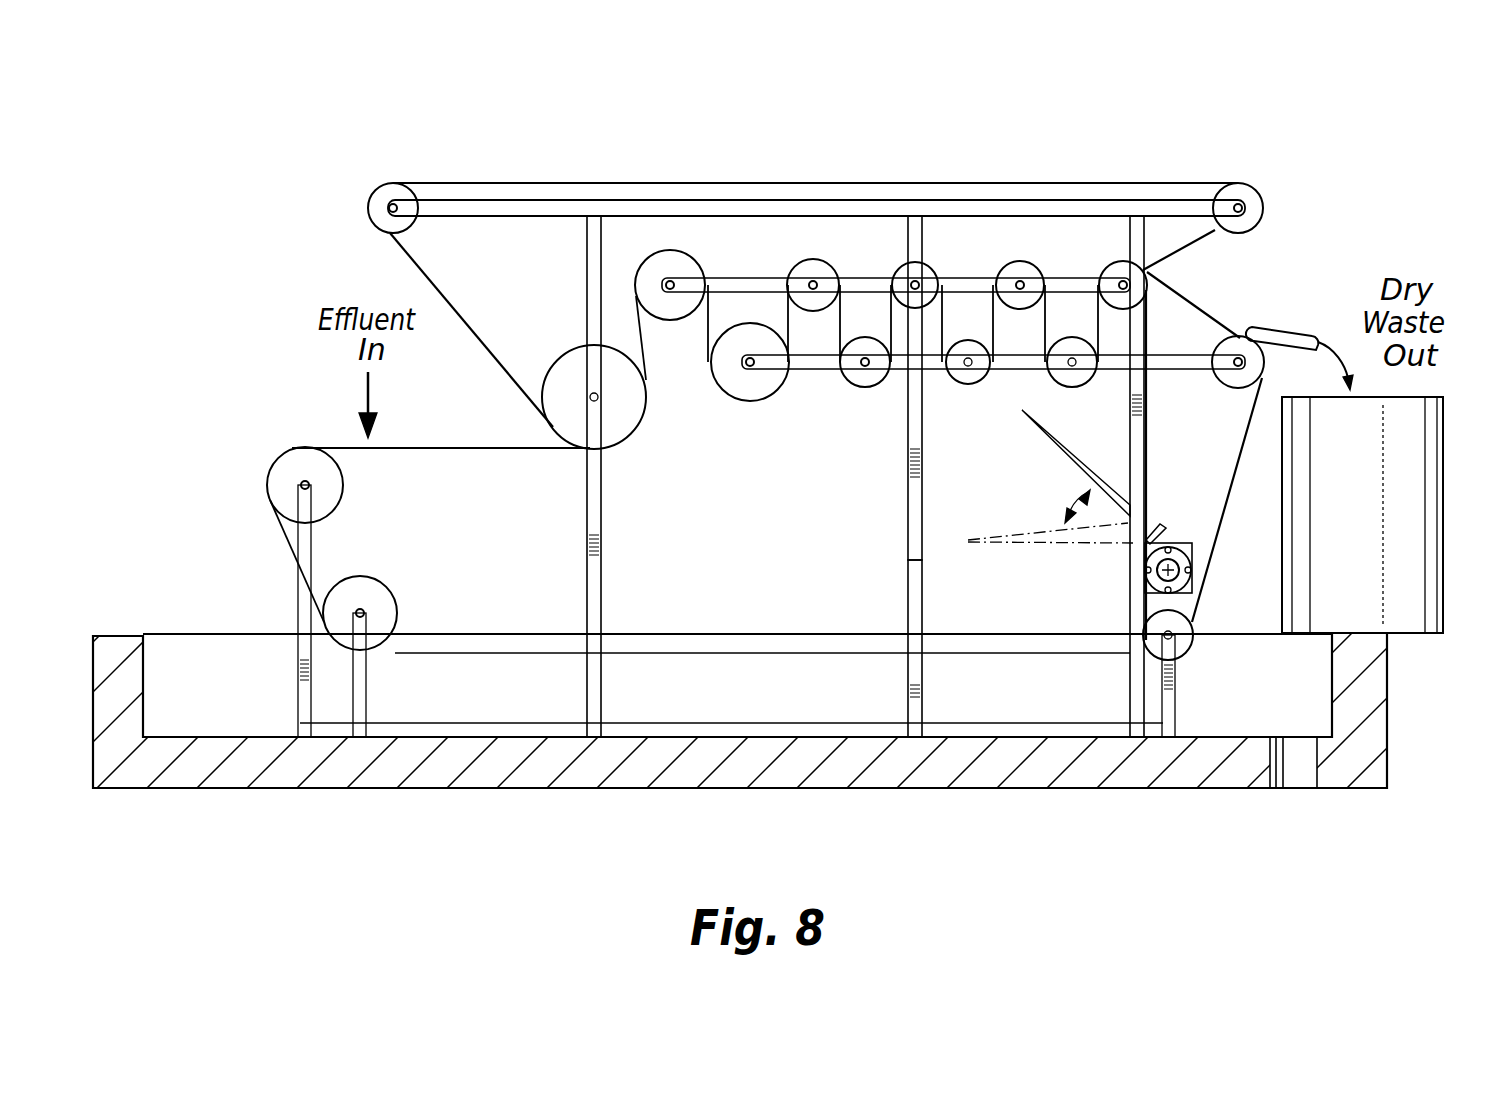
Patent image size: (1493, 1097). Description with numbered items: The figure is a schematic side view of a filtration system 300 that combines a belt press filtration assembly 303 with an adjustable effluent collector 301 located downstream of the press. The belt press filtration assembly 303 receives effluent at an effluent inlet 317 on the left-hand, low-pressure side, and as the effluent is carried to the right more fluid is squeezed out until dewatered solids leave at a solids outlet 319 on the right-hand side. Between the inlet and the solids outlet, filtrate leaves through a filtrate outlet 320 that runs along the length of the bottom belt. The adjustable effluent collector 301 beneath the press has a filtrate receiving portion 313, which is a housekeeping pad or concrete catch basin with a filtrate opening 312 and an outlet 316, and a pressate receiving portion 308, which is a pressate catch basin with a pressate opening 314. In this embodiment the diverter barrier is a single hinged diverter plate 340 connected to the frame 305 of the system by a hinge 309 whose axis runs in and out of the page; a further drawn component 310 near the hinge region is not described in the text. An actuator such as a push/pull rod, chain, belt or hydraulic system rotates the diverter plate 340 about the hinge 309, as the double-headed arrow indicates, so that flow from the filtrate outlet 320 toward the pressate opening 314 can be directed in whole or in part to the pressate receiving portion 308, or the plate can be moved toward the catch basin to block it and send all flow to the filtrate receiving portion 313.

The filtration system 300 is at (1280, 132).
The adjustable effluent collector 301 is at (893, 505).
The belt press filtration assembly 303 is at (582, 312).
The frame 305 is at (912, 600).
The pressate receiving portion 308 is at (1203, 553).
The hinge 309 is at (1148, 532).
The drive shaft 310 is at (1180, 574).
The filtrate opening 312 is at (150, 660).
The filtrate receiving portion 313 is at (1075, 775).
The pressate opening 314 is at (1180, 545).
The outlet 316 is at (1300, 775).
The effluent inlet 317 is at (483, 435).
The solids outlet 319 is at (1270, 273).
The filtrate outlet 320 is at (608, 452).
The hinged diverter plate 340 is at (1056, 440).